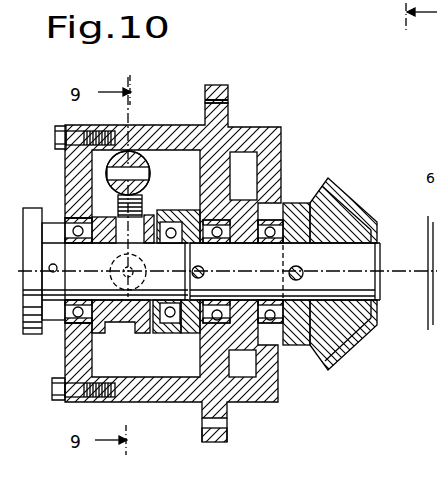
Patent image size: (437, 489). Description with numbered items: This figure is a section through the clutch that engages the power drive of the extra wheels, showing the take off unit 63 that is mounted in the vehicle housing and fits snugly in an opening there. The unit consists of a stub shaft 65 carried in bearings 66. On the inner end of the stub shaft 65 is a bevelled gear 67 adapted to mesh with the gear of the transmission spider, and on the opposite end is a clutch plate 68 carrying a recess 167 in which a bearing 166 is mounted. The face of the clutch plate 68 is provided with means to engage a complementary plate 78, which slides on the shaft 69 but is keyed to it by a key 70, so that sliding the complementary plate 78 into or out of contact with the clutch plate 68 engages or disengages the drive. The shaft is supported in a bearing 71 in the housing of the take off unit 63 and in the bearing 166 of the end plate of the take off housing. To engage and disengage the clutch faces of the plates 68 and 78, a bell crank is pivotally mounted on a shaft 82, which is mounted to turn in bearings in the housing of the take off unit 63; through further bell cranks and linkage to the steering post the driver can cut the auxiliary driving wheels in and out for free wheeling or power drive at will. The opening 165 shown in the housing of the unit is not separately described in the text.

The take off unit 63 is at (163, 130).
The stub shaft 65 is at (337, 276).
The bearings 66 is at (284, 203).
The bevelled gear 67 is at (342, 193).
The clutch plate 68 is at (168, 221).
The shaft 69 is at (96, 276).
The key 70 is at (126, 330).
The bearing 71 is at (62, 210).
The complementary plate 78 is at (143, 208).
The shaft 82 is at (130, 152).
The window opening 165 is at (211, 206).
The bearing 166 is at (181, 336).
The recess 167 is at (162, 326).